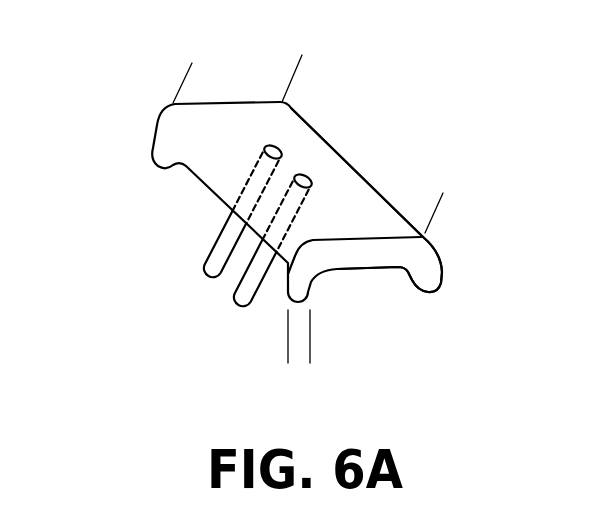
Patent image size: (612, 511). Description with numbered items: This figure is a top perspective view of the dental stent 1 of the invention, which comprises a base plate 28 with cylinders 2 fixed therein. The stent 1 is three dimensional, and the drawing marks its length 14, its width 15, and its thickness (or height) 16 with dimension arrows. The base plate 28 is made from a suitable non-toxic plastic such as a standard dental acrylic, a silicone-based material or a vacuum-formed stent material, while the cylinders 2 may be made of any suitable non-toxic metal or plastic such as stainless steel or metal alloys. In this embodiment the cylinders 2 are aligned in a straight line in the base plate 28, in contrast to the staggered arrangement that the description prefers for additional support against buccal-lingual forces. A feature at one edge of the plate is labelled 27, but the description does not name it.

The stent 1 is at (126, 127).
The cylinders 2 is at (251, 177).
The length 14 is at (294, 73).
The width 15 is at (290, 82).
The thickness 16 is at (363, 335).
The bend edge 27 is at (315, 133).
The base plate 28 is at (425, 257).